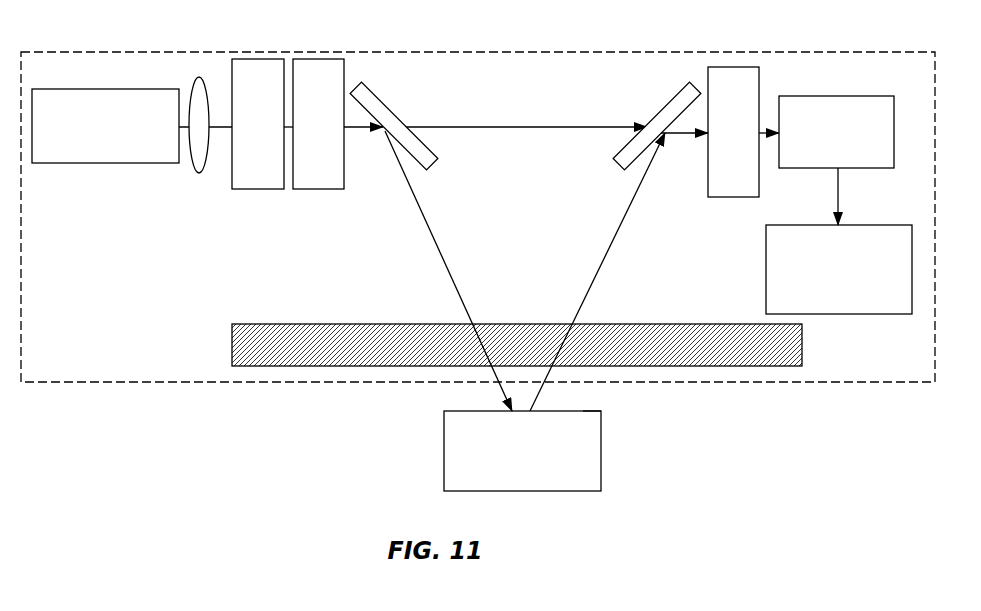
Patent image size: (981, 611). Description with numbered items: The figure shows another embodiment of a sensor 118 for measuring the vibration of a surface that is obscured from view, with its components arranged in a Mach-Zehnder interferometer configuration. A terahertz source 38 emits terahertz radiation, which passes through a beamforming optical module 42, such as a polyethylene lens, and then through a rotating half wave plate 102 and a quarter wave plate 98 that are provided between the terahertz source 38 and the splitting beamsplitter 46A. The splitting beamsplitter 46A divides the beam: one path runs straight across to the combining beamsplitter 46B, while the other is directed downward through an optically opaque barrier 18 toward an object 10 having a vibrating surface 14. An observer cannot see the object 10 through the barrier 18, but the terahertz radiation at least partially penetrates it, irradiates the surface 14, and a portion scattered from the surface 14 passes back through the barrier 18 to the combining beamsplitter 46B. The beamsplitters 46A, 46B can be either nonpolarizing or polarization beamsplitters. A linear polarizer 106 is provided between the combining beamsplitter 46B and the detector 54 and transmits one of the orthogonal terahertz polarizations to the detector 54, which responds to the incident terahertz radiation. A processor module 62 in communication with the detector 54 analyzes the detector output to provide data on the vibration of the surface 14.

The sensor 118 is at (632, 52).
The terahertz source 38 is at (95, 146).
The beamforming optical module 42 is at (200, 172).
The rotating half wave plate 102 is at (276, 139).
The quarter wave plate 98 is at (331, 139).
The splitting beamsplitter 46A is at (413, 157).
The combining beamsplitter 46B is at (632, 170).
The linear polarizer 106 is at (716, 154).
The detector 54 is at (825, 153).
The processor module 62 is at (827, 306).
The barrier 18 is at (733, 366).
The object 10 is at (511, 474).
The vibrating surface 14 is at (583, 413).